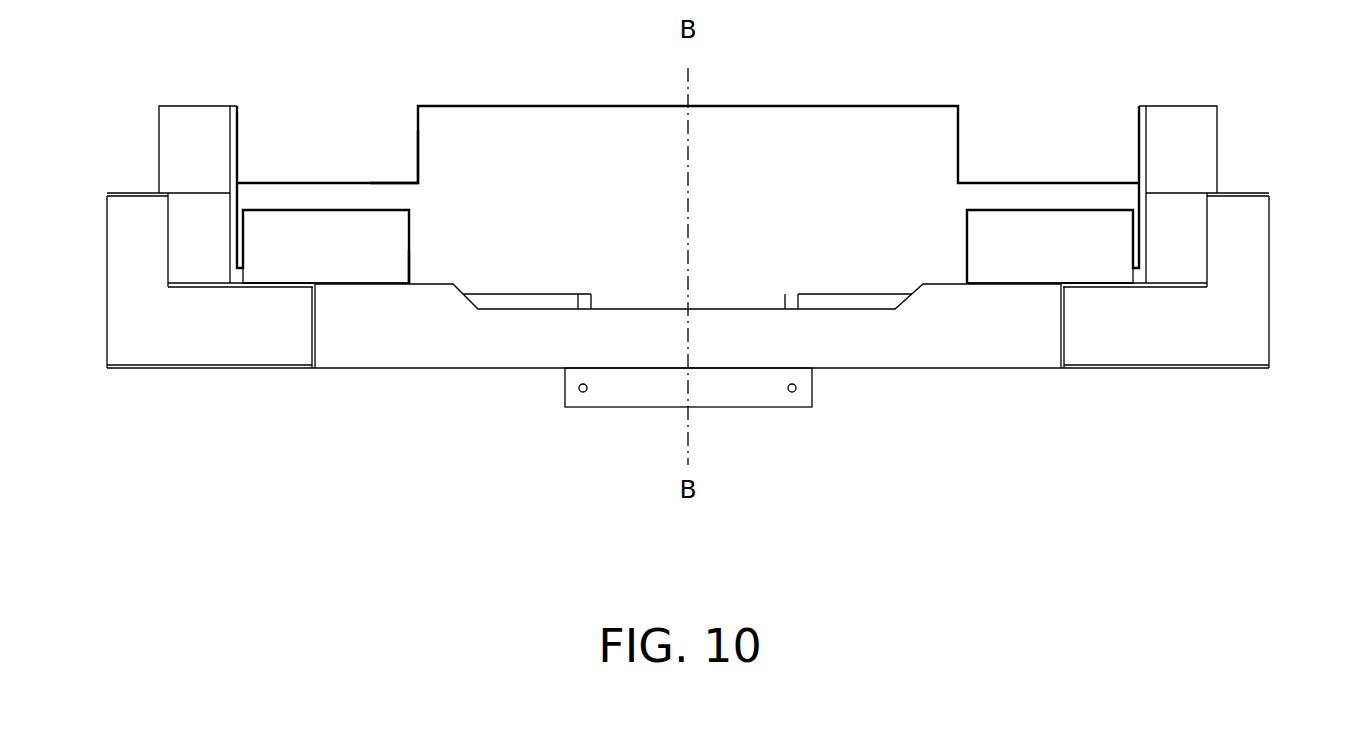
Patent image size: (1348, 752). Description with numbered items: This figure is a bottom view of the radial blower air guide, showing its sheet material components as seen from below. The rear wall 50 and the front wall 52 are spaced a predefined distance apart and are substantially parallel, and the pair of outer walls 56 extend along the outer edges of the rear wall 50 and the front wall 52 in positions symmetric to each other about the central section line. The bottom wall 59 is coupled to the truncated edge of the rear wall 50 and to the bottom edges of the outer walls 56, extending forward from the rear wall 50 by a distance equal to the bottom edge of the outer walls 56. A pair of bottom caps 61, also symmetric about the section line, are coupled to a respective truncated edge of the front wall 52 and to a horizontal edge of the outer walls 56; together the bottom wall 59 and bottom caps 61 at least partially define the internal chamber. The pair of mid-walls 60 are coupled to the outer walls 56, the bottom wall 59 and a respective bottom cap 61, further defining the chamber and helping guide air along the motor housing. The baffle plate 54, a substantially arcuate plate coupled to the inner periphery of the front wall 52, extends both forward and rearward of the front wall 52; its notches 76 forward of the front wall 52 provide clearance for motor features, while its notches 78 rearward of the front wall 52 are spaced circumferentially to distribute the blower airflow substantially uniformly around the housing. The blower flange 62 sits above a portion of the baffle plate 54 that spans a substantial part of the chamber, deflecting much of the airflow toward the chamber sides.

The rear wall 50 is at (147, 368).
The front wall 52 is at (115, 192).
The baffle plate 54 is at (880, 105).
The outer walls 56 is at (118, 322).
The bottom wall 59 is at (993, 343).
The mid-walls 60 is at (277, 282).
The bottom caps 61 is at (193, 205).
The blower flange 62 is at (608, 408).
The notches 76 is at (408, 134).
The notches 78 is at (398, 260).